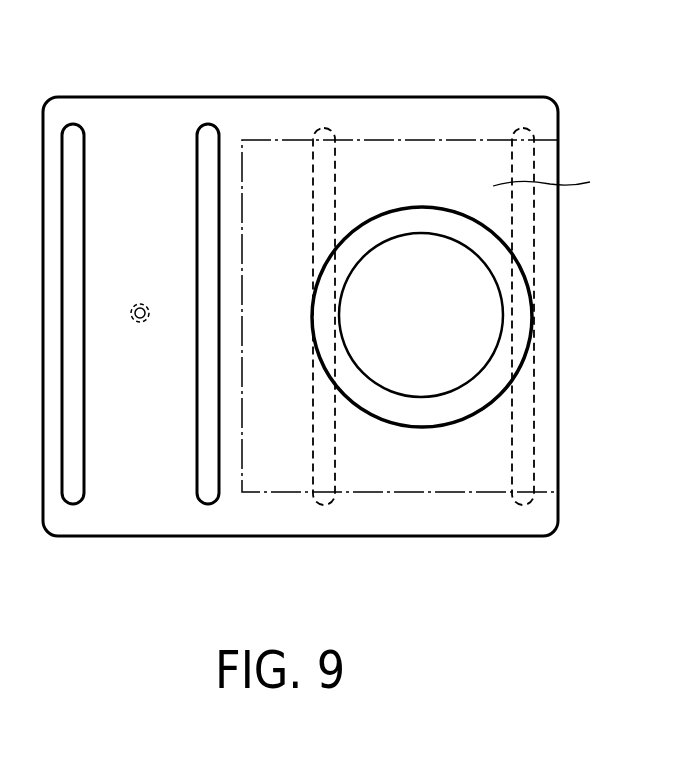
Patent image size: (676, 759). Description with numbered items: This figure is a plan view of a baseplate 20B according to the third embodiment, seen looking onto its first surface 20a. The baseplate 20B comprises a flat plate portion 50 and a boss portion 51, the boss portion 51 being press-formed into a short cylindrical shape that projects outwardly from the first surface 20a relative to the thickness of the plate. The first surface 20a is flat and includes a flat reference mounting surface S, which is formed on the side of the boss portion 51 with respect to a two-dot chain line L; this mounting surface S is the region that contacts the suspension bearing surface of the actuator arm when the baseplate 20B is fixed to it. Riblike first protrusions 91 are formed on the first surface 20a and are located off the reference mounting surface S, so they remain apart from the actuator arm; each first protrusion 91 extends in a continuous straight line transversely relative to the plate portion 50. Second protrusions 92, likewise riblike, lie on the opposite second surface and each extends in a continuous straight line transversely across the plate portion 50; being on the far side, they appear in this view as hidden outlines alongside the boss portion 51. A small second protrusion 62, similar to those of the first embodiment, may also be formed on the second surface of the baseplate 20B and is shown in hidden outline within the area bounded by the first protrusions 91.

The baseplate 20B is at (150, 88).
The first surface 20a is at (421, 108).
The plate portion 50 is at (363, 517).
The boss portion 51 is at (520, 320).
The second protrusions 62 is at (140, 324).
The first protrusions 91 is at (72, 124).
The second protrusions 92 is at (325, 130).
The two-dot chain line L is at (273, 138).
The reference mounting surface S is at (552, 182).